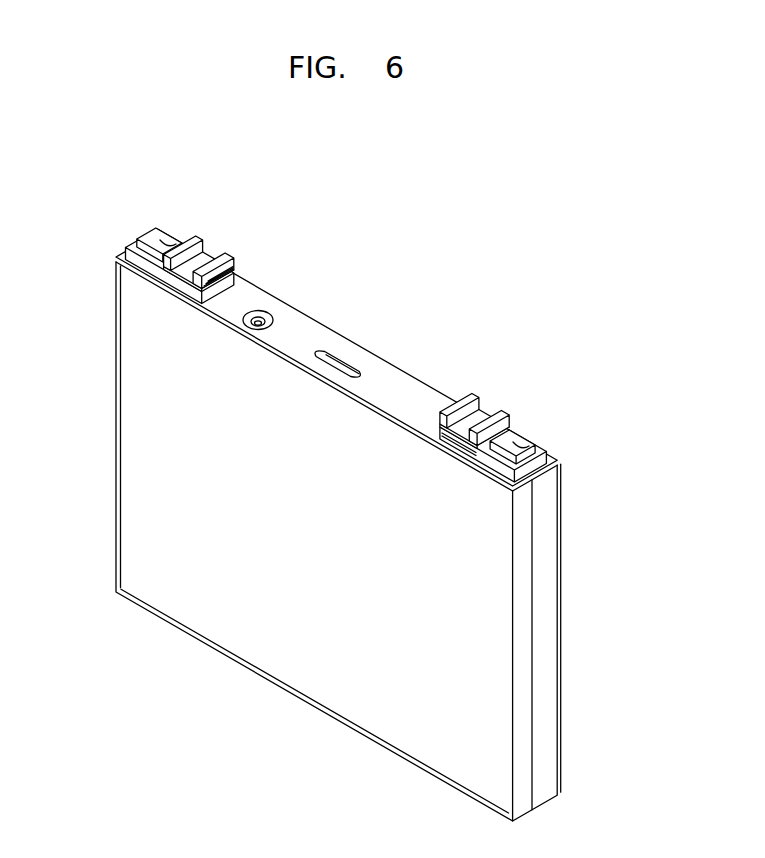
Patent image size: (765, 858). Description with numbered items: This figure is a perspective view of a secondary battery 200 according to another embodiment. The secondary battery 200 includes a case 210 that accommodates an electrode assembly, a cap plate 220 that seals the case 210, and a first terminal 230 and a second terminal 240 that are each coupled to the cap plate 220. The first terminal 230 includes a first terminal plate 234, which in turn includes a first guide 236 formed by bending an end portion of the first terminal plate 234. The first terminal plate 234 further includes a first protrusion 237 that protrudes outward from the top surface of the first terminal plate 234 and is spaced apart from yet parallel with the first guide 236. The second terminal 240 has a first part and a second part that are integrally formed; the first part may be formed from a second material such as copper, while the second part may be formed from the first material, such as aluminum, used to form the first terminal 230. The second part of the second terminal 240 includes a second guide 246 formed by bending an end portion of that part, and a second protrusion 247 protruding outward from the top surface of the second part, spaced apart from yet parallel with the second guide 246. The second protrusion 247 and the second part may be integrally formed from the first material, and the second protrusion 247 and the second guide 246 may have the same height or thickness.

The secondary battery 200 is at (347, 494).
The case 210 is at (310, 667).
The cap plate 220 is at (391, 386).
The first terminal 230 is at (155, 235).
The first terminal plate 234 is at (158, 231).
The first guide 236 is at (231, 261).
The first protrusion 237 is at (193, 238).
The second terminal 240 is at (553, 409).
The second guide 246 is at (468, 396).
The second protrusion 247 is at (509, 417).